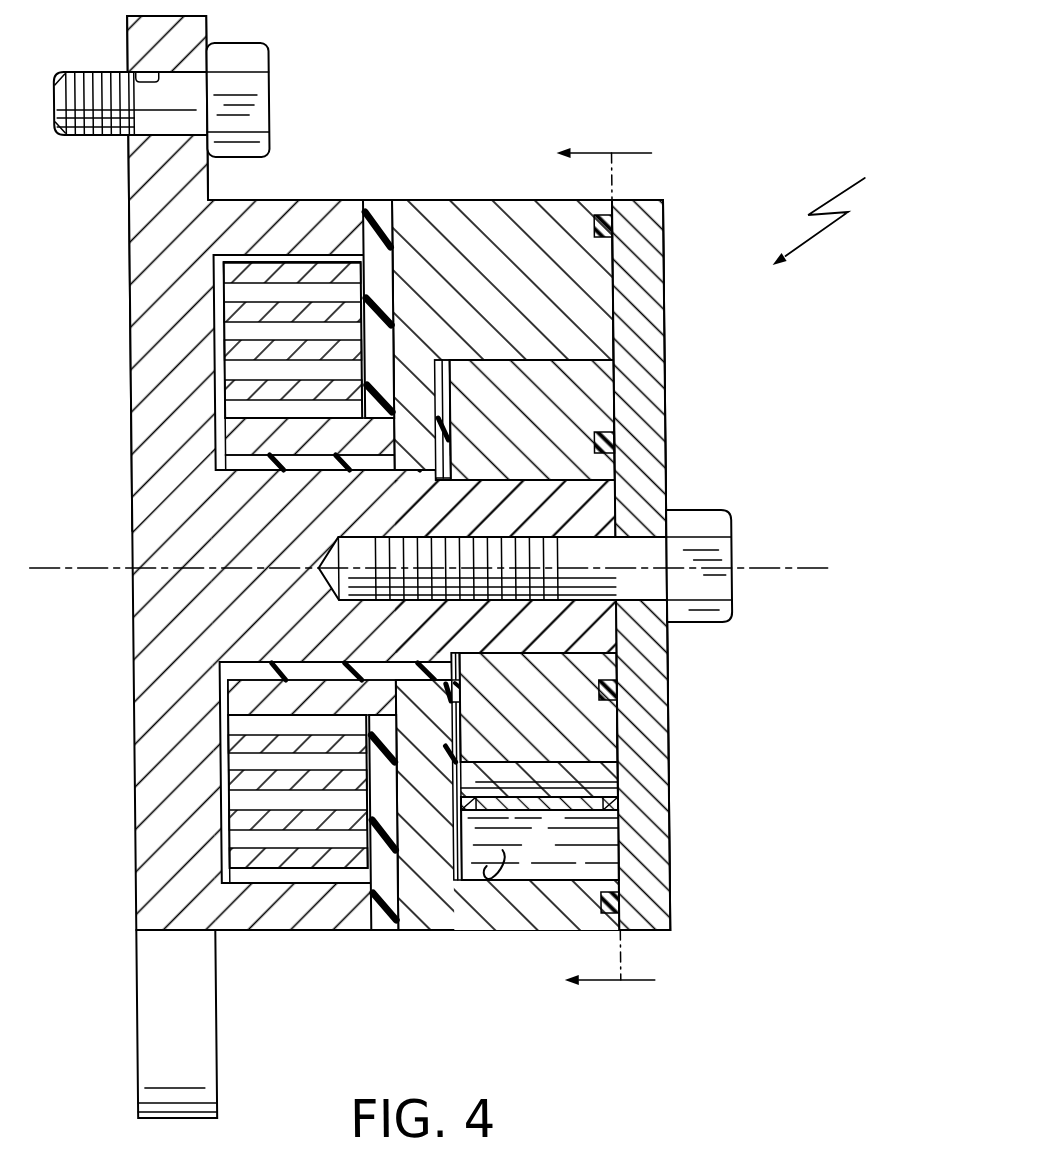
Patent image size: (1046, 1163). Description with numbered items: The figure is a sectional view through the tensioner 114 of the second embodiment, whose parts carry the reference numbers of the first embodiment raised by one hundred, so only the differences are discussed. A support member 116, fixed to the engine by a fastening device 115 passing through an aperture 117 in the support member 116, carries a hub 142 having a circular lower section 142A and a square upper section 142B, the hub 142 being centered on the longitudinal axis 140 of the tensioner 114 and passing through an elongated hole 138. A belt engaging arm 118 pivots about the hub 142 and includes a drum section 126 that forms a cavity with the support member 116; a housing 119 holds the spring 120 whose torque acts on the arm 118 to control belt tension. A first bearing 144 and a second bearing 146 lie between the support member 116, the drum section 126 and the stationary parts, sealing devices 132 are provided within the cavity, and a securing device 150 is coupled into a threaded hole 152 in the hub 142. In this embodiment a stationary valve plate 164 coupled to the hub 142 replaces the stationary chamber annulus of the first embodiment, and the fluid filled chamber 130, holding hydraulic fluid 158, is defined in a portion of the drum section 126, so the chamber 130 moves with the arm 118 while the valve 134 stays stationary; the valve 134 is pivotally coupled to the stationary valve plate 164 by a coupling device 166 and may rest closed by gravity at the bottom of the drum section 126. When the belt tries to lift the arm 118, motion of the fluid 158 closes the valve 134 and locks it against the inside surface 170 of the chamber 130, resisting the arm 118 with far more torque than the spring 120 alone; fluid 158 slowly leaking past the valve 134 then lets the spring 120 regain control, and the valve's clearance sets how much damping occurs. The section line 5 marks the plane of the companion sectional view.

The tensioner 114 is at (845, 209).
The fastening device 115 is at (265, 90).
The support member 116 is at (140, 205).
The aperture 117 is at (140, 80).
The belt engaging arm 118 is at (478, 200).
The housing 119 is at (225, 322).
The spring 120 is at (225, 346).
The drum section 126 is at (513, 198).
The fluid filled chamber 130 is at (603, 855).
The sealing device 132 is at (614, 225).
The valve 134 is at (537, 810).
The elongated hole 138 is at (487, 481).
The longitudinal axis 140 is at (745, 570).
The hub 142 is at (615, 630).
The circular lower section 142A is at (256, 668).
The square upper section 142B is at (597, 500).
The first bearing 144 is at (375, 200).
The second bearing 146 is at (230, 480).
The securing device 150 is at (720, 583).
The threaded hole 152 is at (530, 602).
The fluid 158 is at (602, 828).
The stationary valve plate 164 is at (590, 408).
The coupling device 166 is at (612, 770).
The inside surface 170 is at (488, 874).
The section line 5- 5 is at (608, 571).